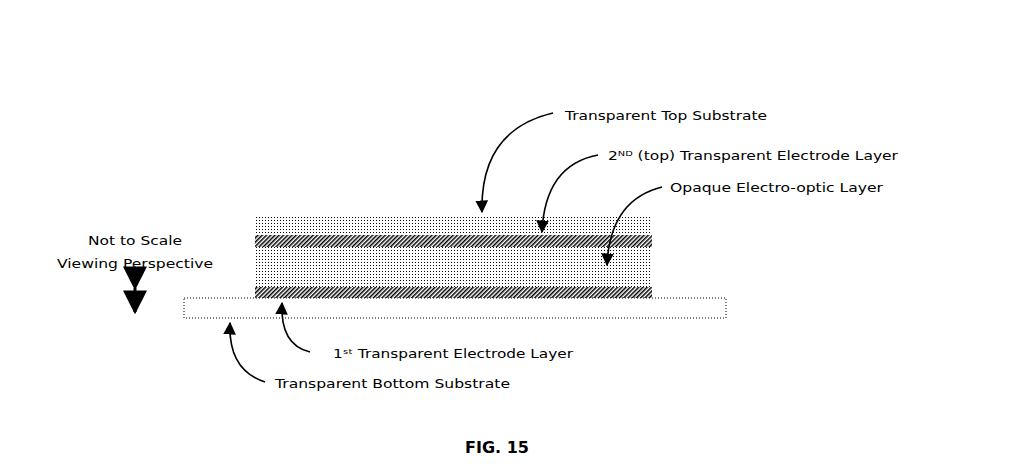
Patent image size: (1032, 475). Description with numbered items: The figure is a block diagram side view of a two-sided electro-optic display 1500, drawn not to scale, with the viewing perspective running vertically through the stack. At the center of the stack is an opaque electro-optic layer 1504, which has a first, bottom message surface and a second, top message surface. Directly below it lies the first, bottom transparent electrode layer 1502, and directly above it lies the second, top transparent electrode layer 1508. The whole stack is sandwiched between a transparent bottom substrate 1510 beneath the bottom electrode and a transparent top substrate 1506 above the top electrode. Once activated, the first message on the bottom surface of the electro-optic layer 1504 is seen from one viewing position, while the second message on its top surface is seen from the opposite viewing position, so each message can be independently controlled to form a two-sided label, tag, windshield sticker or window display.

The electro-optic display 1500 is at (200, 42).
The first, bottom transparent electrode layer 1502 is at (647, 293).
The opaque electro-optic layer 1504 is at (643, 265).
The transparent top substrate 1506 is at (310, 225).
The second, top transparent electrode layer 1508 is at (260, 245).
The transparent bottom substrate 1510 is at (703, 307).